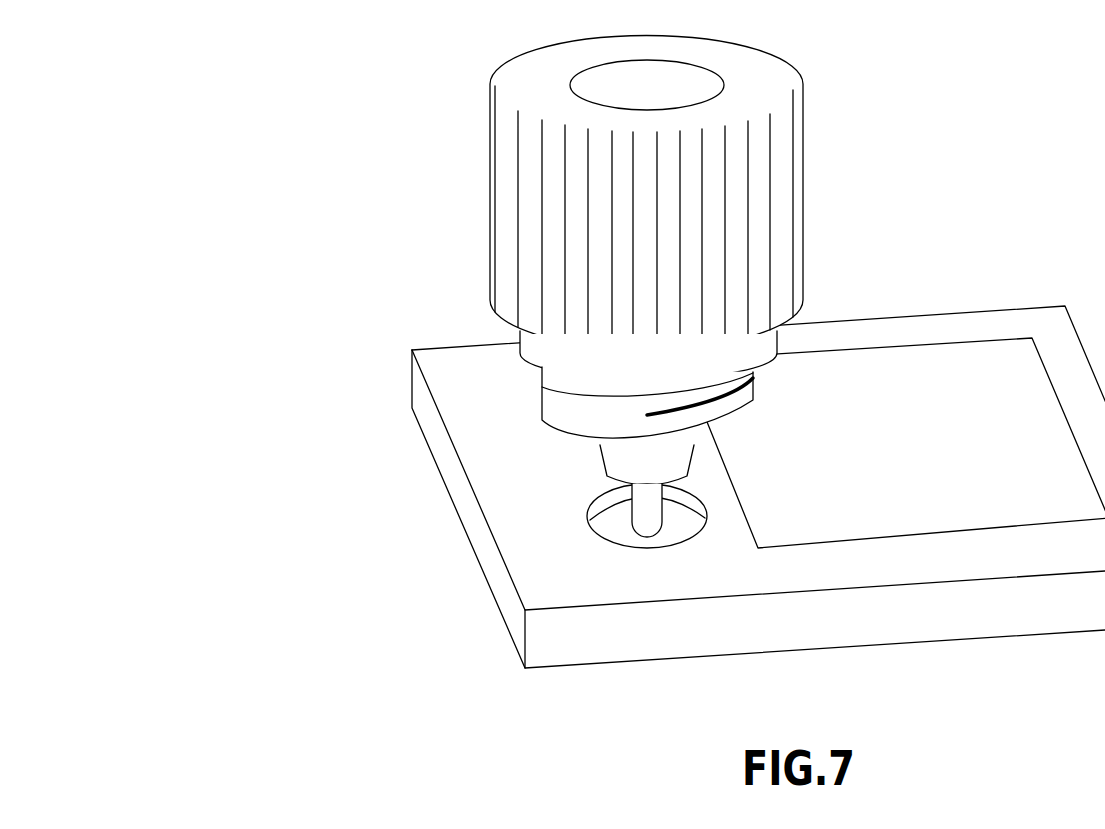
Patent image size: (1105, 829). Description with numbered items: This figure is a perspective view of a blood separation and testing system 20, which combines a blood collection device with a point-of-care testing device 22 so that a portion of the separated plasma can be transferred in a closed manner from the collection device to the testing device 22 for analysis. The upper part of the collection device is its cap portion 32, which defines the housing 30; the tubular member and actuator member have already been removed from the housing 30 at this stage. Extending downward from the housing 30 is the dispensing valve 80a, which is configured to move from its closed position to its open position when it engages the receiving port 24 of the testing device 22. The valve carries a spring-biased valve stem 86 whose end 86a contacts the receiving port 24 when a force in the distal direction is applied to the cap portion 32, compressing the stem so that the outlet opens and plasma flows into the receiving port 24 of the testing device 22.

The blood separation and testing system 20 is at (315, 148).
The point-of-care testing device 22 is at (483, 413).
The receiving port 24 is at (678, 522).
The housing 30 is at (699, 192).
The cap portion 32 is at (783, 166).
The valve 80a is at (620, 462).
The valve stem 86 is at (620, 542).
The end of the valve stem 86a is at (647, 527).